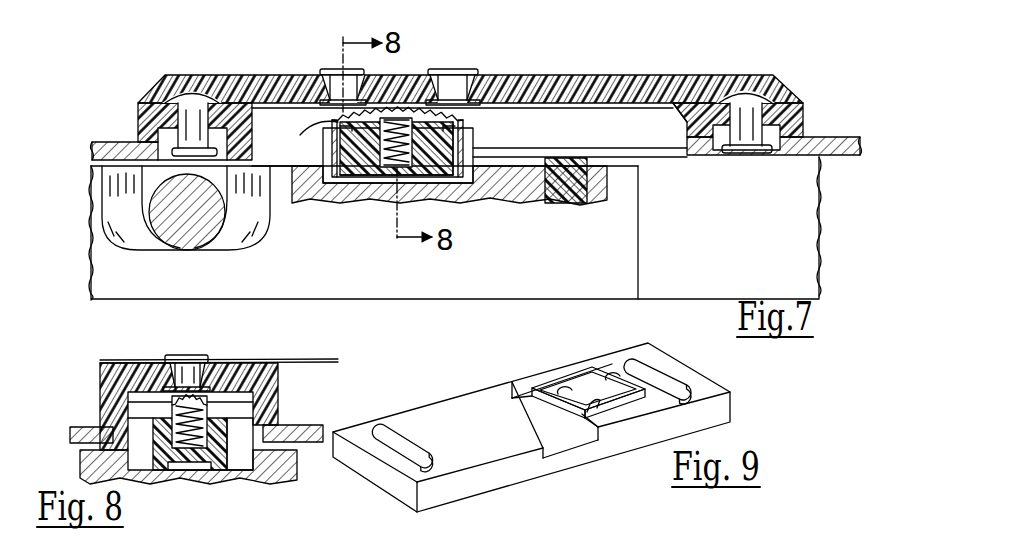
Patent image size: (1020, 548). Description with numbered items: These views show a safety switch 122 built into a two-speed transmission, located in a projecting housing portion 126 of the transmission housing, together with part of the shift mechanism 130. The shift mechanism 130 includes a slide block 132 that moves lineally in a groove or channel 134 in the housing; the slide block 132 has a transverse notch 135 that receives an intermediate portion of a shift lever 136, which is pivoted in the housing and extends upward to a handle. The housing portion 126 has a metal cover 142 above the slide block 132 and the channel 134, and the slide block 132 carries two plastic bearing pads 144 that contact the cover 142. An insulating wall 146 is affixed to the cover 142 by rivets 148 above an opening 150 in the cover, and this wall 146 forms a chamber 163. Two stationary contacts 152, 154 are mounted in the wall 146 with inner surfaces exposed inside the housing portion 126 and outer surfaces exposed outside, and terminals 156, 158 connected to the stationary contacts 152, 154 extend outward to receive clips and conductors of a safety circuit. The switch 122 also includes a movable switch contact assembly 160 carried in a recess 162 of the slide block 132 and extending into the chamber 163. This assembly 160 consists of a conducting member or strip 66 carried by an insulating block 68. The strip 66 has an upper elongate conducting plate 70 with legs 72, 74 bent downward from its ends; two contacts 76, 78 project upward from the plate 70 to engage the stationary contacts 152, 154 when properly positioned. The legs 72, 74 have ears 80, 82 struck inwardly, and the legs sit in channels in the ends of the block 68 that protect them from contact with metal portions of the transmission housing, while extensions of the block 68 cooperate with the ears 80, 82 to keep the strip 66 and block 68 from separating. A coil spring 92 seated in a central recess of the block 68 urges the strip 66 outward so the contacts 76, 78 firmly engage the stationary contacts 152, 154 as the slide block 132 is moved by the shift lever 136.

In FIG. 7, the conducting member or strip 66 is at (326, 123).
In FIG. 8, the conducting member or strip 66 is at (247, 402).
In FIG. 7, the insulating member or block 68 is at (383, 172).
In FIG. 8, the insulating member or block 68 is at (143, 433).
In FIG. 7, the upper elongate conducting plate 70 is at (397, 108).
In FIG. 7, the leg 72 is at (330, 178).
In FIG. 7, the leg 74 is at (480, 130).
In FIG. 7, the contact 76 is at (345, 116).
In FIG. 7, the contact 78 is at (448, 112).
In FIG. 7, the ear 80 is at (334, 140).
In FIG. 7, the ear 82 is at (455, 182).
In FIG. 7, the coil spring 92 is at (352, 165).
In FIG. 7, the safety switch 122 is at (312, 60).
In FIG. 7, the projecting housing portion 126 is at (652, 76).
In FIG. 7, the shift mechanism 130 is at (118, 130).
In FIG. 9, the slide block 132 is at (488, 490).
In FIG. 7, the groove or channel 134 is at (720, 300).
In FIG. 7, the transverse notch 135 is at (228, 240).
In FIG. 9, the transverse notch 135 is at (503, 398).
In FIG. 7, the shift lever 136 is at (150, 196).
In FIG. 7, the metal cover 142 is at (850, 130).
In FIG. 9, the plastic bearing pad 144 is at (402, 430).
In FIG. 7, the insulating wall 146 is at (555, 80).
In FIG. 7, the rivet 148 is at (180, 96).
In FIG. 7, the opening 150 is at (688, 140).
In FIG. 7, the stationary contact 152 is at (345, 71).
In FIG. 8, the stationary contact 152 is at (200, 354).
In FIG. 7, the stationary contact 154 is at (445, 69).
In FIG. 7, the terminal 156 is at (340, 75).
In FIG. 8, the terminal 156 is at (326, 356).
In FIG. 7, the terminal 158 is at (492, 62).
In FIG. 8, the movable switch contact assembly 160 is at (150, 402).
In FIG. 9, the movable switch contact assembly 160 is at (576, 376).
In FIG. 8, the recess 162 is at (232, 462).
In FIG. 9, the recess 162 is at (597, 408).
In FIG. 7, the chamber 163 is at (628, 106).